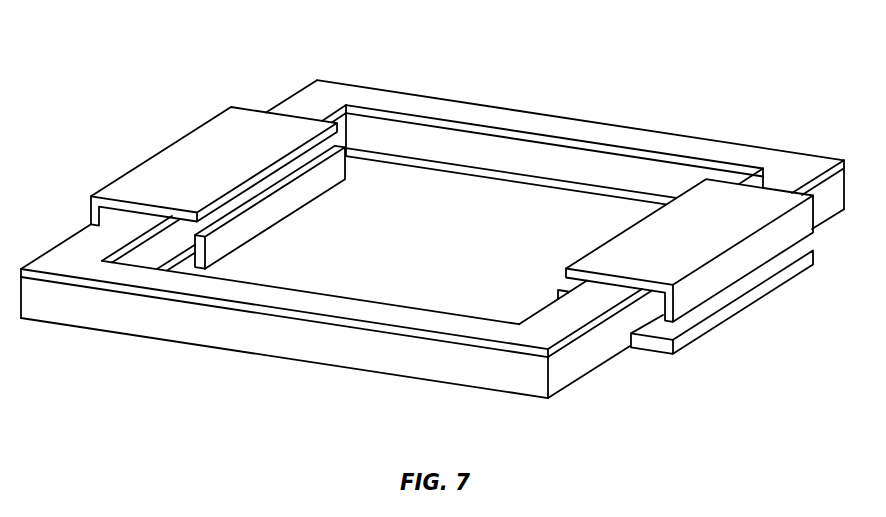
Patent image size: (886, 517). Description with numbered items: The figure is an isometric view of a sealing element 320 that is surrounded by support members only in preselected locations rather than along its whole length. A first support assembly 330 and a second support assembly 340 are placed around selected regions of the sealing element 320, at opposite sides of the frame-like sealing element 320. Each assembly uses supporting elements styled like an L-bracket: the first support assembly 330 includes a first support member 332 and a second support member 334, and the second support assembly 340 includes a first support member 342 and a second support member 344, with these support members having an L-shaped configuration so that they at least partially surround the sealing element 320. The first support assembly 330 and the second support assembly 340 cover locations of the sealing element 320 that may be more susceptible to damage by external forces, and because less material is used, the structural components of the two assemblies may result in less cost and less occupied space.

The sealing element 320 is at (513, 85).
The first support assembly 330 is at (229, 167).
The first support member 332 is at (205, 145).
The second support member 334 is at (282, 210).
The second support assembly 340 is at (689, 275).
The first support member 342 is at (770, 197).
The second support member 344 is at (686, 340).